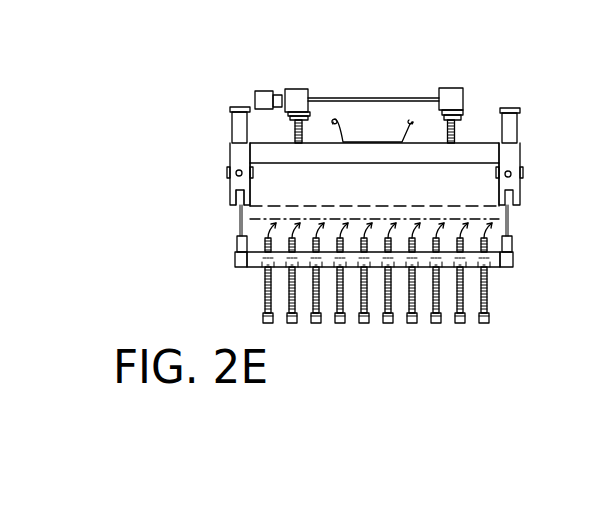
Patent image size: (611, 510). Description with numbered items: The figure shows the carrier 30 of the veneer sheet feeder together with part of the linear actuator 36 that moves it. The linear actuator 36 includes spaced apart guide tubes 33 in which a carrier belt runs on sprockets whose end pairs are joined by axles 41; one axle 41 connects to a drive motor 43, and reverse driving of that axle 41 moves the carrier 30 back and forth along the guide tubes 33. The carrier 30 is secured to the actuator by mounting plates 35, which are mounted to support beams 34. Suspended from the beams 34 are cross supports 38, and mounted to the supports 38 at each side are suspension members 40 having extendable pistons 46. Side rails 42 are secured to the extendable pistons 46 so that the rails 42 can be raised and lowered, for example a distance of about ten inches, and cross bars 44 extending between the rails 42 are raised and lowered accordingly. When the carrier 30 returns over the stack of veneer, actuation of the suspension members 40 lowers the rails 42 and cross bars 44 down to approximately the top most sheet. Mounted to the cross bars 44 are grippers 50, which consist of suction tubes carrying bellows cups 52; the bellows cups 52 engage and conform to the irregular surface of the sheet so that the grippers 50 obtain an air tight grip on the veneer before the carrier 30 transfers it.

The carrier 30 is at (234, 263).
The guide tubes 33 is at (308, 95).
The support beams 34 is at (305, 138).
The mounting plates 35 is at (292, 120).
The linear actuator 36 is at (297, 88).
The cross supports 38 is at (348, 170).
The suspension members 40 is at (229, 187).
The axles 41 is at (395, 100).
The side rails 42 is at (236, 254).
The drive motor 43 is at (262, 99).
The cross bars 44 is at (388, 205).
The extendable pistons 46 is at (238, 107).
The grippers 50 is at (256, 303).
The bellows cups 52 is at (365, 323).